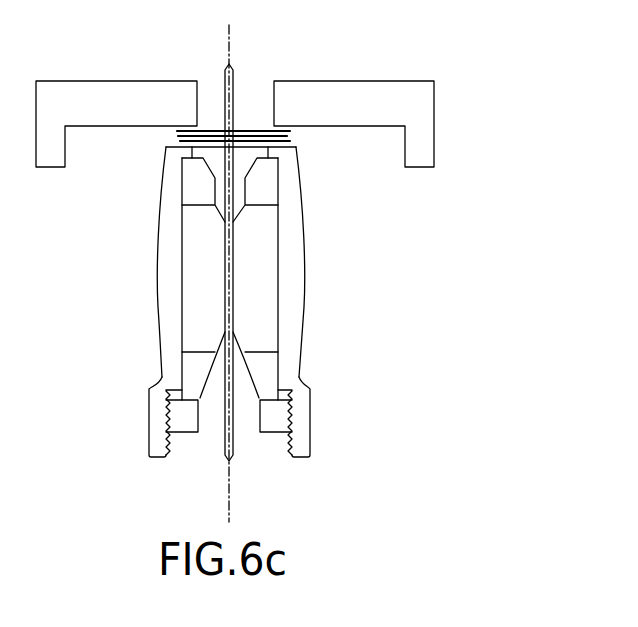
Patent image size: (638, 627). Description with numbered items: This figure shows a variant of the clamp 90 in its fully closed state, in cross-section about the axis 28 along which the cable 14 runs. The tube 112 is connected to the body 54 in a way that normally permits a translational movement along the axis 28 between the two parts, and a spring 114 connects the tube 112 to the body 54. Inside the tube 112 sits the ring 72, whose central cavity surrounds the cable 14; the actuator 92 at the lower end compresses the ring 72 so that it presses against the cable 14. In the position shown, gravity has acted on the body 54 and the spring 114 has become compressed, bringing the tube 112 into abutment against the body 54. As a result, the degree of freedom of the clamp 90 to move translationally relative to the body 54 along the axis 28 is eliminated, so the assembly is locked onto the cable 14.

The cable 14 is at (224, 85).
The axis 28 is at (231, 51).
The body 54 is at (374, 81).
The ring 72 is at (260, 285).
The clamp 90 is at (272, 294).
The actuator 92 is at (134, 425).
The tube 112 is at (165, 305).
The spring 114 is at (178, 133).